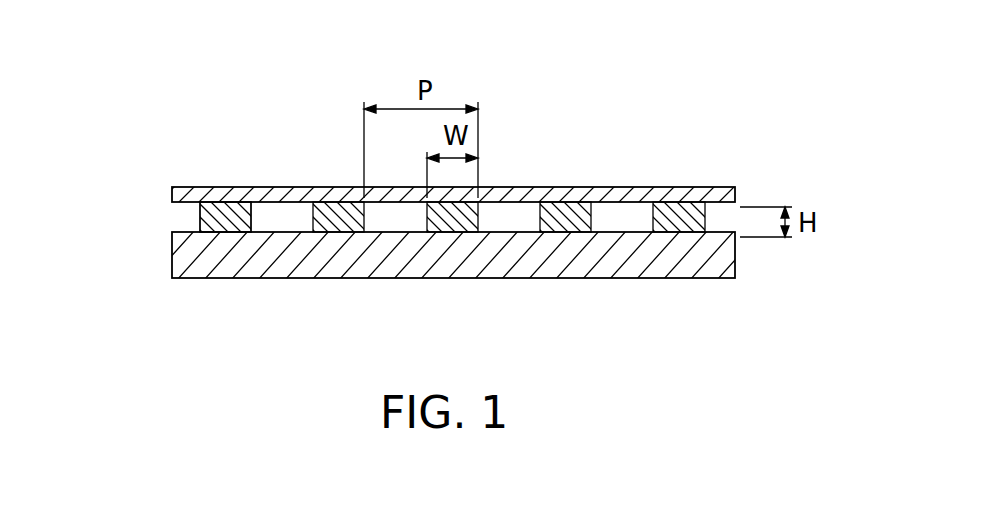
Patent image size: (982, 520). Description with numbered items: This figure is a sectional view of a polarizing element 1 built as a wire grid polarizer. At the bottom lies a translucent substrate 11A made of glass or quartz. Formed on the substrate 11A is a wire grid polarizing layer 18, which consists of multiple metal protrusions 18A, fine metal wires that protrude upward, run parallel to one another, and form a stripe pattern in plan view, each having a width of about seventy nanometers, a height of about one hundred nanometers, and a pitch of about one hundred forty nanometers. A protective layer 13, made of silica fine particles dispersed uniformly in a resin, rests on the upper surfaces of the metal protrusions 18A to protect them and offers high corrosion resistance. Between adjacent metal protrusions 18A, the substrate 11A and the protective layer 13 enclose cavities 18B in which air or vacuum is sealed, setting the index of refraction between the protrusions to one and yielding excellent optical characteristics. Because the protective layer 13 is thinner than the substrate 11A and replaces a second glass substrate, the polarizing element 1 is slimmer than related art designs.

The polarizing element 1 is at (738, 116).
The protective layer 13 is at (735, 197).
The substrate 11A is at (733, 258).
The wire grid polarizing layer 18 is at (164, 214).
The metal protrusions 18A is at (227, 222).
The cavities 18B is at (398, 222).